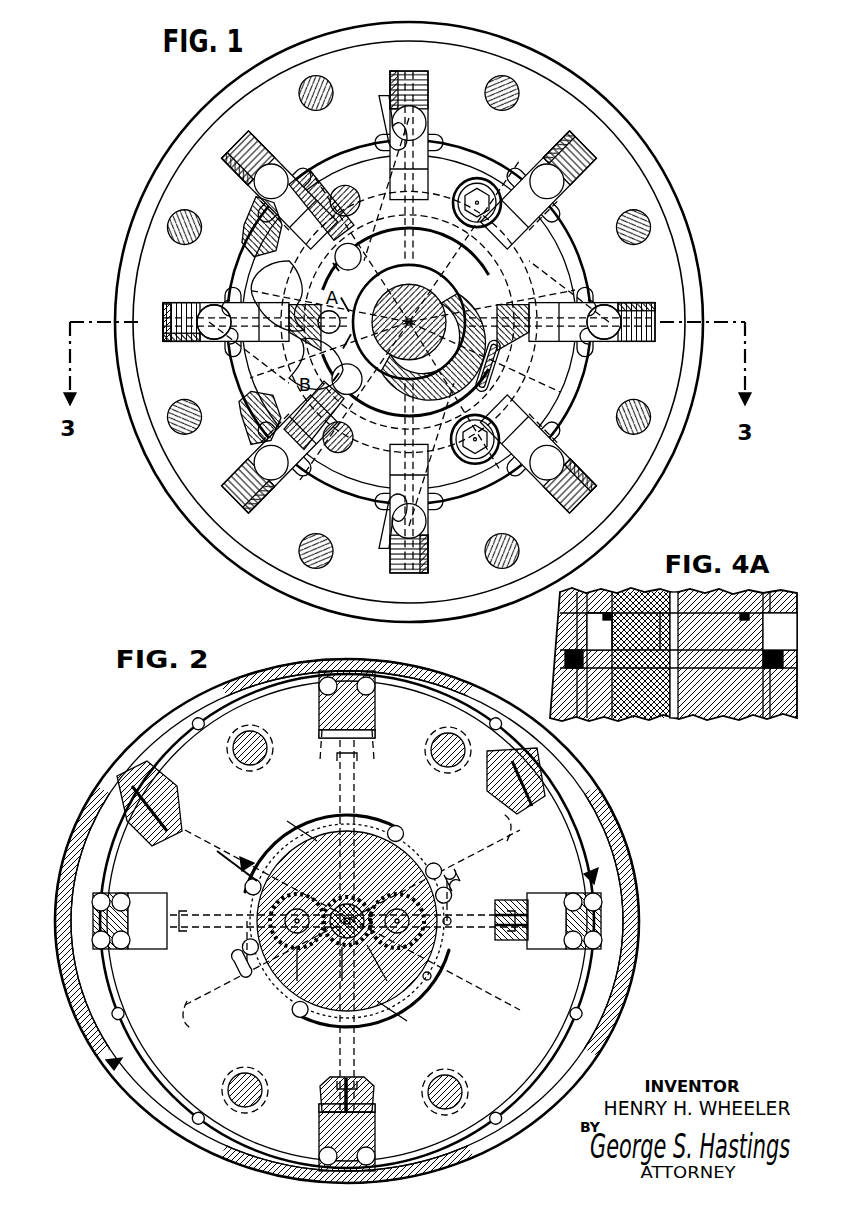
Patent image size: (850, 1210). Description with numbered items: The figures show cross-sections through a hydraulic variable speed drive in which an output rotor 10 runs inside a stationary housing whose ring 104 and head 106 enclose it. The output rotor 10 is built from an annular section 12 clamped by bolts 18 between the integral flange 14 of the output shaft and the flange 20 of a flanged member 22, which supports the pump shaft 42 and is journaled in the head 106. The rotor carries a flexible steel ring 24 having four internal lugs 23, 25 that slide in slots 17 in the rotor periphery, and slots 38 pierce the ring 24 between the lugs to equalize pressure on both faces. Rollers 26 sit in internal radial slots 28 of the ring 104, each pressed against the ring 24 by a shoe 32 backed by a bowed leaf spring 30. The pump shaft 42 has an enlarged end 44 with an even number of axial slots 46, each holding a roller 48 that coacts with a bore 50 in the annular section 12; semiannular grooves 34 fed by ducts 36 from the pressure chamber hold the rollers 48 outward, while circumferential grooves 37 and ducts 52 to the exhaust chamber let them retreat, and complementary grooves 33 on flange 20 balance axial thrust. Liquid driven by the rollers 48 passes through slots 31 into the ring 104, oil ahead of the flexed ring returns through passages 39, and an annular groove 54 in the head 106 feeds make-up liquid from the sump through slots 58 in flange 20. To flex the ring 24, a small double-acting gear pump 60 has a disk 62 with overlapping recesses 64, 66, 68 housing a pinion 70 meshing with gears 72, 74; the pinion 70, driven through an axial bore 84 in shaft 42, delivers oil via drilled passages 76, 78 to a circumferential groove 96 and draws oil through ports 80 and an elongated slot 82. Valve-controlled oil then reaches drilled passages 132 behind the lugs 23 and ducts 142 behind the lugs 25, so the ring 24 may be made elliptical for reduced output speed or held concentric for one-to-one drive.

In FIG. 2, the output rotor 10 is at (602, 872).
In FIG. 1, the annular section 12 is at (326, 197).
In FIG. 4A, the annular section 12 is at (792, 602).
In FIG. 1, the integral flange 14 is at (296, 192).
In FIG. 2, the integral flange 14 is at (185, 777).
In FIG. 1, the slots 17 is at (360, 142).
In FIG. 2, the slots 17 is at (372, 702).
In FIG. 1, the bolts 18 is at (372, 174).
In FIG. 2, the bolts 18 is at (252, 747).
In FIG. 1, the flange 20 is at (590, 302).
In FIG. 4A, the flange 20 is at (740, 690).
In FIG. 1, the flanged member 22 is at (492, 364).
In FIG. 4A, the flanged member 22 is at (625, 712).
In FIG. 1, the internal lugs 23 is at (214, 332).
In FIG. 2, the internal lugs 23 is at (115, 937).
In FIG. 1, the flexible ring 24 is at (245, 222).
In FIG. 2, the flexible ring 24 is at (430, 692).
In FIG. 1, the internal lugs 25 is at (395, 128).
In FIG. 2, the internal lugs 25 is at (360, 720).
In FIG. 1, the rollers 26 is at (428, 92).
In FIG. 1, the internal radial slots 28 is at (195, 312).
In FIG. 1, the bowed leaf springs 30 is at (160, 320).
In FIG. 1, the slots 31 is at (386, 320).
In FIG. 1, the shoe 32 is at (166, 340).
In FIG. 4A, the complementary grooves 33 is at (683, 592).
In FIG. 1, the semiannular grooves 34 is at (398, 294).
In FIG. 2, the semiannular grooves 34 is at (300, 824).
In FIG. 1, the ducts 36 is at (572, 207).
In FIG. 2, the ducts 36 is at (210, 987).
In FIG. 1, the circumferential grooves 37 is at (488, 284).
In FIG. 2, the circumferential grooves 37 is at (245, 952).
In FIG. 1, the slots 38 is at (215, 224).
In FIG. 2, the slots 38 is at (75, 817).
In FIG. 1, the passages 39 is at (300, 264).
In FIG. 1, the shaft 42 is at (420, 302).
In FIG. 4A, the shaft 42 is at (645, 712).
In FIG. 1, the enlarged end 44 is at (372, 247).
In FIG. 4A, the enlarged end 44 is at (614, 602).
In FIG. 1, the axial slots 46 is at (346, 320).
In FIG. 1, the roller 48 is at (348, 202).
In FIG. 1, the bore 50 is at (345, 264).
In FIG. 1, the ducts 52 is at (238, 264).
In FIG. 2, the ducts 52 is at (150, 822).
In FIG. 4A, the annular groove 54 is at (770, 672).
In FIG. 1, the slots 58 is at (488, 380).
In FIG. 4A, the slots 58 is at (775, 612).
In FIG. 2, the gear pump 60 is at (285, 877).
In FIG. 2, the disk 62 is at (390, 897).
In FIG. 2, the central recess 64 is at (340, 952).
In FIG. 2, the cylindrical recess 66 is at (300, 937).
In FIG. 2, the cylindrical recess 68 is at (400, 852).
In FIG. 2, the pinion 70 is at (340, 897).
In FIG. 2, the gear 72 is at (275, 907).
In FIG. 2, the gear 74 is at (425, 947).
In FIG. 2, the drilled passage 76 is at (397, 837).
In FIG. 2, the drilled passage 78 is at (300, 952).
In FIG. 2, the ports 80 is at (330, 892).
In FIG. 2, the elongated slot 82 is at (360, 952).
In FIG. 4A, the axial bore 84 is at (673, 712).
In FIG. 2, the circumferential groove 96 is at (425, 872).
In FIG. 1, the ring 104 is at (565, 104).
In FIG. 4A, the head 106 is at (600, 712).
In FIG. 1, the drilled passages 132 is at (505, 302).
In FIG. 2, the drilled passages 132 is at (225, 887).
In FIG. 1, the ducts 142 is at (425, 102).
In FIG. 2, the ducts 142 is at (345, 762).